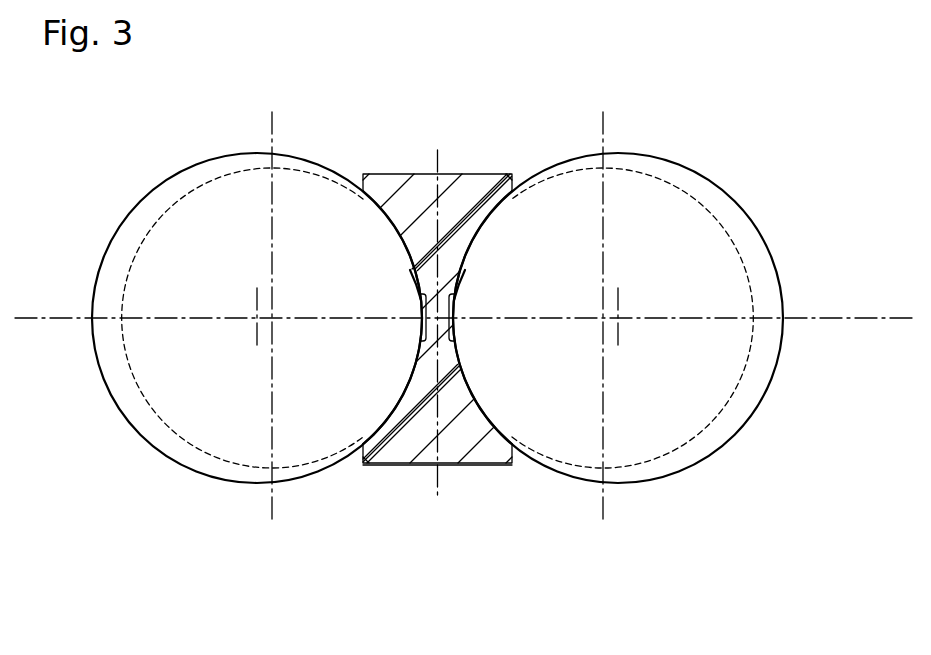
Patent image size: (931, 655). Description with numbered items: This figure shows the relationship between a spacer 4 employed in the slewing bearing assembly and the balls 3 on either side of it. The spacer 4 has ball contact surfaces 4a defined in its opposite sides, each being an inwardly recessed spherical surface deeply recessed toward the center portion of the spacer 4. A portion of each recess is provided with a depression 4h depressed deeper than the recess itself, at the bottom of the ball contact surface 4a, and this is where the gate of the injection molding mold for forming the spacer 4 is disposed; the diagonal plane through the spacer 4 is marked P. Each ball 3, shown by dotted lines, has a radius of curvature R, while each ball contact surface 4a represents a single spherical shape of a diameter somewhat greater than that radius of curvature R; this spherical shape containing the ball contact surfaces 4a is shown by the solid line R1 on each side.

The ball 3 is at (152, 232).
The spherical shape R1 is at (110, 397).
The spacer 4 is at (470, 192).
The ball contact surface 4a is at (377, 243).
The depression 4h is at (422, 315).
The radius of curvature R is at (414, 280).
The plane P is at (455, 328).